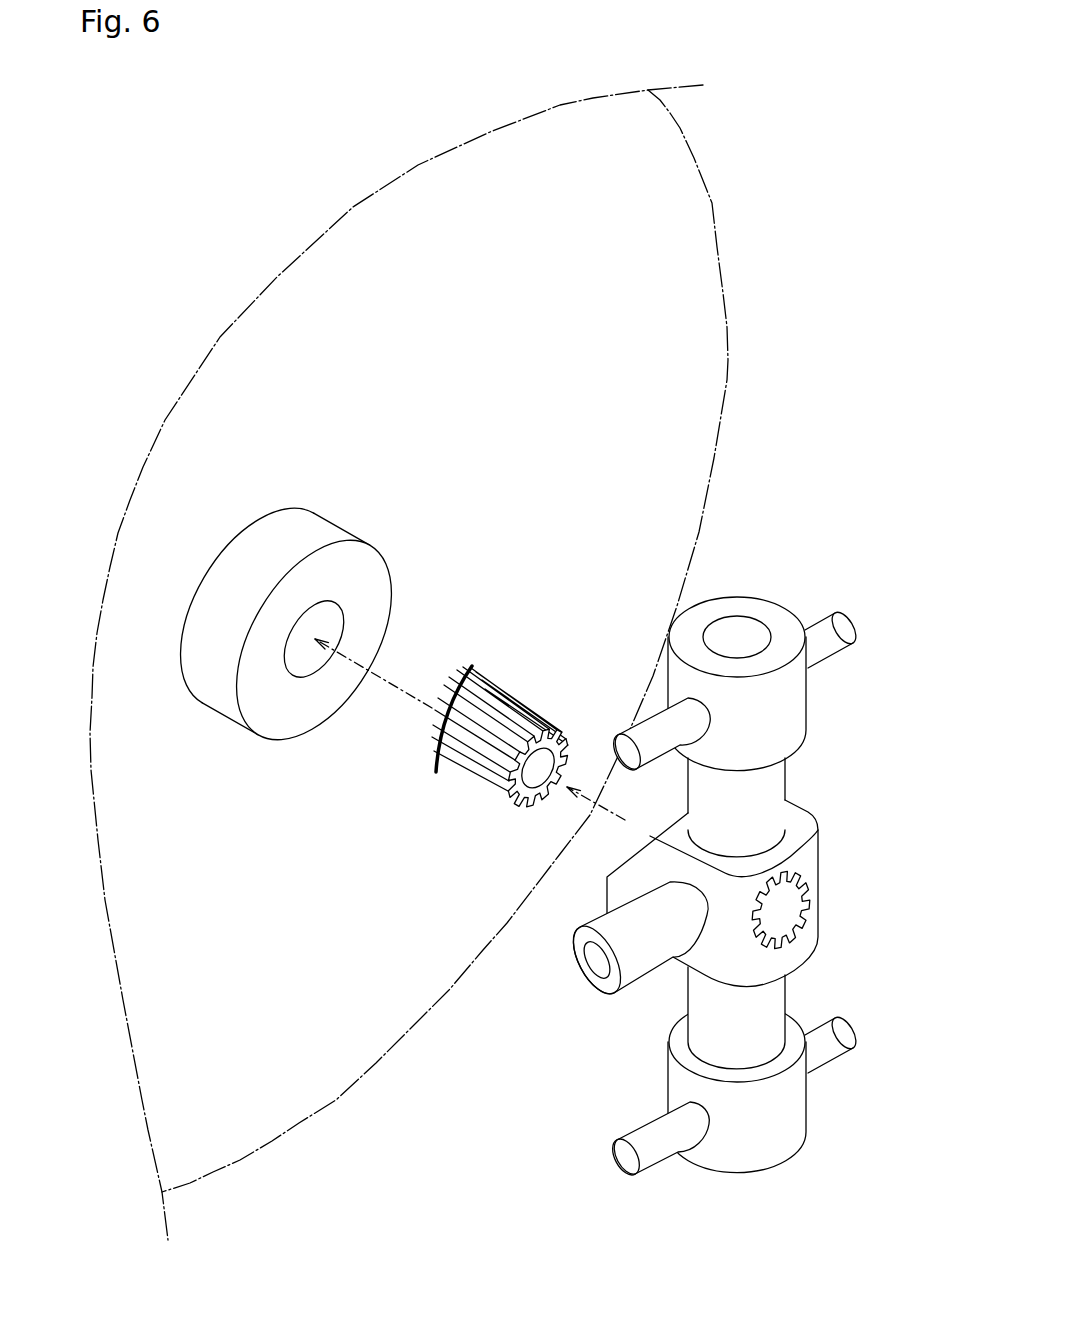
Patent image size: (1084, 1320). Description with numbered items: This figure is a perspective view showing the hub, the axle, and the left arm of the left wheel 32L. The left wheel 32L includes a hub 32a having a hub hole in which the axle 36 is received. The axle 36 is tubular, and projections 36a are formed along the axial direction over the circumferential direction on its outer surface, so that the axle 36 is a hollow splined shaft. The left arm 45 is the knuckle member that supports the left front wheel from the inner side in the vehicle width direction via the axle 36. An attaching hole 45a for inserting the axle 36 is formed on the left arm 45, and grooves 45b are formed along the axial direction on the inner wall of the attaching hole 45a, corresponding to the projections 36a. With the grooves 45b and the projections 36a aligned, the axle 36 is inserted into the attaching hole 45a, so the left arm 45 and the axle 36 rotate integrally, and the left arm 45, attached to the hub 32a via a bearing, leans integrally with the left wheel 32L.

The left wheel 32L is at (711, 207).
The hub 32a is at (260, 540).
The axle 36 is at (511, 682).
The projections 36a is at (566, 748).
The left arm 45 is at (740, 811).
The attaching hole 45a is at (766, 925).
The grooves 45b is at (790, 933).